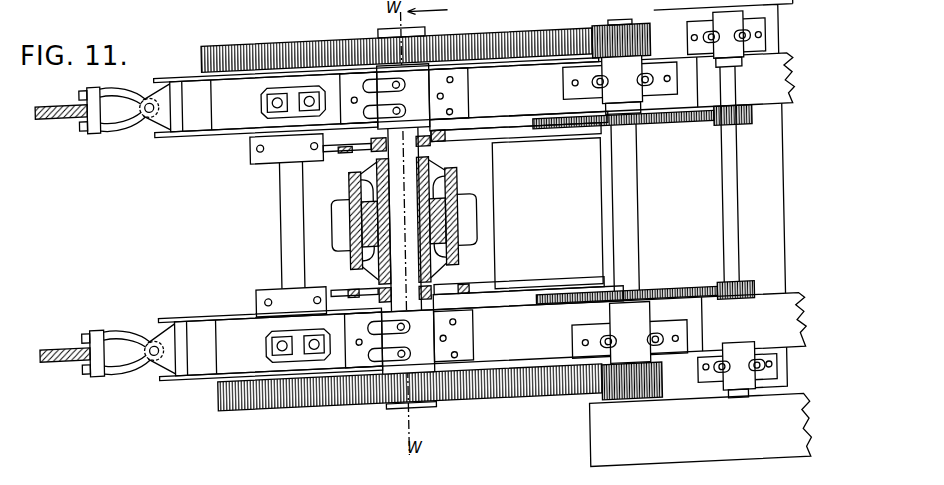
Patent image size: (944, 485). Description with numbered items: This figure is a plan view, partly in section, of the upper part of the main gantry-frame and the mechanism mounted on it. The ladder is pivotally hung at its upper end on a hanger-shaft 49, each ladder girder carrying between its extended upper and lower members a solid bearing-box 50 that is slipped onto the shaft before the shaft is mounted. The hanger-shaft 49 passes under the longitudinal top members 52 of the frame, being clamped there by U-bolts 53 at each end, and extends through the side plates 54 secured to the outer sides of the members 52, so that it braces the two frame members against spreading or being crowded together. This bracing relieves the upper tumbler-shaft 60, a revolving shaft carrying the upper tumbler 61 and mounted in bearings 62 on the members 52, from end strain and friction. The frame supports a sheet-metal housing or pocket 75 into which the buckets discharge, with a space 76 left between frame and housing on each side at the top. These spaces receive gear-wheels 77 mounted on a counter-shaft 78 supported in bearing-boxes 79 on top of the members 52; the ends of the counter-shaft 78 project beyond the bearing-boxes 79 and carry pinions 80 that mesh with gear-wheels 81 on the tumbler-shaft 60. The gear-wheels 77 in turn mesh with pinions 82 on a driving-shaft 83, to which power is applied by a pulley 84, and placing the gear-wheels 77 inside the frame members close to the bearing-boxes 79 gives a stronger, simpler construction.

The hanger-shaft 49 is at (281, 206).
The bearing-box 50 is at (258, 163).
The longitudinal top member 52 is at (792, 106).
The U-bolt 53 is at (261, 90).
The side plate 54 is at (174, 81).
The upper tumbler-shaft 60 is at (415, 180).
The upper tumbler 61 is at (458, 186).
The bearing 62 is at (455, 90).
The housing or pocket 75 is at (532, 141).
The space 76 is at (497, 127).
The gear-wheel 77 is at (582, 128).
The counter-shaft 78 is at (634, 226).
The bearing-box 79 is at (678, 94).
The pinion 80 is at (646, 27).
The gear-wheel 81 is at (503, 39).
The pinion 82 is at (745, 126).
The driving-shaft 83 is at (740, 213).
The pulley 84 is at (763, 463).